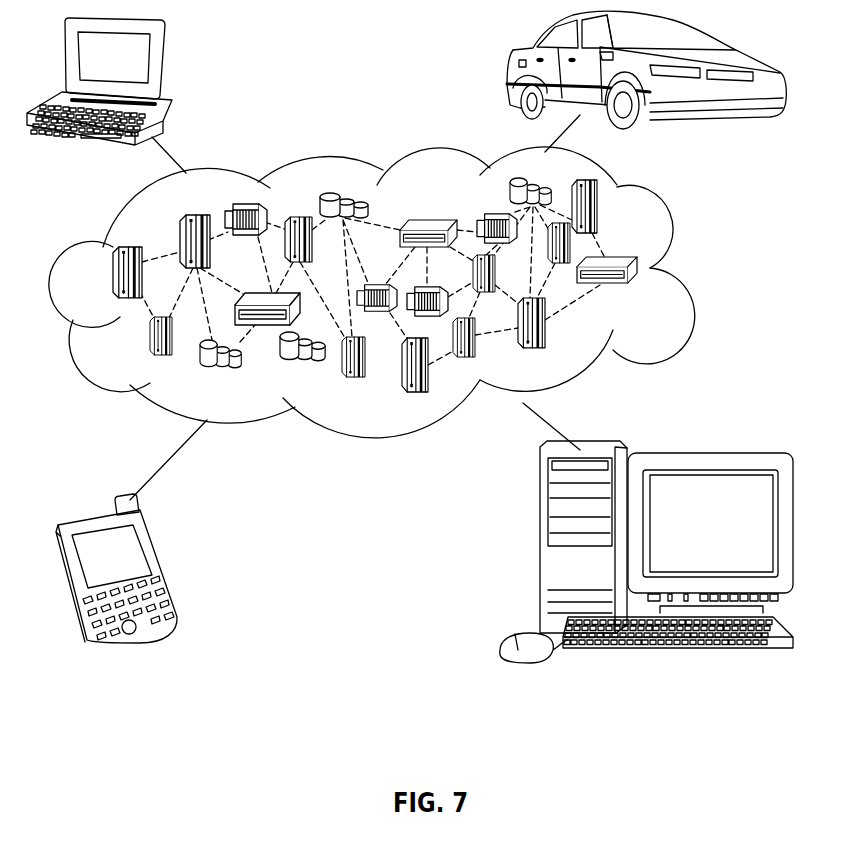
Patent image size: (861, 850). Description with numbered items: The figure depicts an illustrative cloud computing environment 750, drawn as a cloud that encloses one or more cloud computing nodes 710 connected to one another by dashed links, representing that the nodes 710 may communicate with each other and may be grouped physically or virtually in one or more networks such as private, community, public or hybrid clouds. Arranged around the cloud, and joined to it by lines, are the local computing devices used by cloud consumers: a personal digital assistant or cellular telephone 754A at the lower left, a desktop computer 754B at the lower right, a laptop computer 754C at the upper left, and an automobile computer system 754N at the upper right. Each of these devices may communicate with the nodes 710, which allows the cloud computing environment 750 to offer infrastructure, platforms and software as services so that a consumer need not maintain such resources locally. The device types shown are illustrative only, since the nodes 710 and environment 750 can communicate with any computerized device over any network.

The cloud computing nodes 710 is at (420, 307).
The cloud computing environment 750 is at (680, 233).
The personal digital assistant (PDA) or cellular telephone 754A is at (155, 563).
The desktop computer 754B is at (540, 543).
The laptop computer 754C is at (167, 60).
The automobile computer system 754N is at (517, 65).